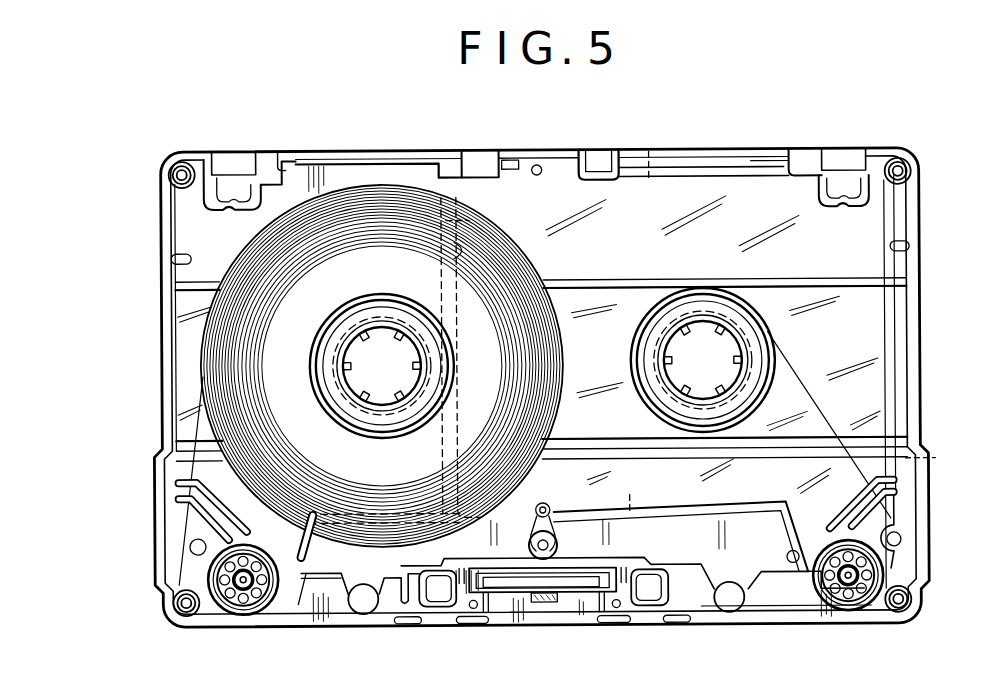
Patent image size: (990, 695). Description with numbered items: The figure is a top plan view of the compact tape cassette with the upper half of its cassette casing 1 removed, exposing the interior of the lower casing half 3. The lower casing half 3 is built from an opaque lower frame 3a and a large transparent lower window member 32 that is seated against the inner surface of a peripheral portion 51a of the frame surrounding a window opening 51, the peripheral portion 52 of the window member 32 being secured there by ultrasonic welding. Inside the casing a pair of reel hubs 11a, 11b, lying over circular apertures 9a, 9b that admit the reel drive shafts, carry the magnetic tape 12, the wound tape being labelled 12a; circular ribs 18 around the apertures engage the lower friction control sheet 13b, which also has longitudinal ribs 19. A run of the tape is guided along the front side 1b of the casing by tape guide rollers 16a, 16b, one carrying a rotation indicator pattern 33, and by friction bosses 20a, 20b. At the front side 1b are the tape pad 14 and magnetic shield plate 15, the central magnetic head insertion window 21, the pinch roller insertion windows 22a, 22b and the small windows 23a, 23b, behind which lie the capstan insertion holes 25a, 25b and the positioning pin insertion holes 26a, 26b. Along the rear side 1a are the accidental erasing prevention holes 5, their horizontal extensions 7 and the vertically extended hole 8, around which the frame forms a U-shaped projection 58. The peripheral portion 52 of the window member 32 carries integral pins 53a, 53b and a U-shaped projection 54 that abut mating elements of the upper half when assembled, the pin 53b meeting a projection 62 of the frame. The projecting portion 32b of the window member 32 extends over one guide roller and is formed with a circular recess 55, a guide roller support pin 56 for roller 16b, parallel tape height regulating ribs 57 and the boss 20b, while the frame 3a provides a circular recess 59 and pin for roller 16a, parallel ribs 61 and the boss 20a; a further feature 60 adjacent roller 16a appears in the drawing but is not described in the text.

The cassette casing 1 is at (598, 148).
The rear side of casing 1a is at (322, 150).
The front side of casing 1b is at (560, 625).
The lower casing half 3 is at (357, 148).
The lower frame 3a is at (390, 160).
The accidental erasing prevention hole 5 is at (222, 152).
The horizontal extension of hole 7 is at (281, 152).
The vertically extended hole 8 is at (216, 202).
The circular aperture 9a is at (385, 392).
The circular aperture 9b is at (706, 333).
The reel hub 11a is at (345, 388).
The reel hub 11b is at (670, 392).
The magnetic tape 12 is at (797, 377).
The tape roll 12a is at (516, 268).
The lower friction control sheet 13b is at (178, 343).
The tape pad 14 is at (542, 603).
The magnetic shield plate 15 is at (514, 572).
The tape guide roller 16a is at (228, 608).
The tape guide roller 16b is at (836, 610).
The circular rib 18 is at (363, 323).
The rib 19 is at (180, 288).
The friction boss 20a is at (188, 546).
The friction boss 20b is at (901, 543).
The magnetic head insertion window 21 is at (499, 623).
The pinch roller insertion window 22a is at (308, 625).
The pinch roller insertion window 22b is at (762, 625).
The small window 23a is at (443, 625).
The small window 23b is at (655, 625).
The capstan insertion hole 25a is at (360, 610).
The capstan insertion hole 25b is at (724, 610).
The positioning pin insertion hole 26a is at (435, 592).
The positioning pin insertion hole 26b is at (645, 592).
The lower window member 32 is at (865, 262).
The projecting portion of lower window member 32b is at (903, 515).
The rotation indicator pattern 33 is at (222, 580).
The window opening 51 is at (452, 247).
The peripheral portion of frame 51a is at (470, 216).
The peripheral portion of window member 52 is at (445, 170).
The pin 53a is at (538, 164).
The pin 53b is at (785, 557).
The U-shaped projection 54 is at (838, 202).
The circular recess 55 is at (887, 558).
The guide roller support pin 56 is at (827, 550).
The magnetic tape height regulating rib 57 is at (838, 517).
The U-shaped projection 58 is at (240, 210).
The circular recess 59 is at (256, 612).
The roller ring 60 is at (262, 556).
The magnetic tape height regulating rib 61 is at (214, 508).
The projection 62 is at (308, 556).